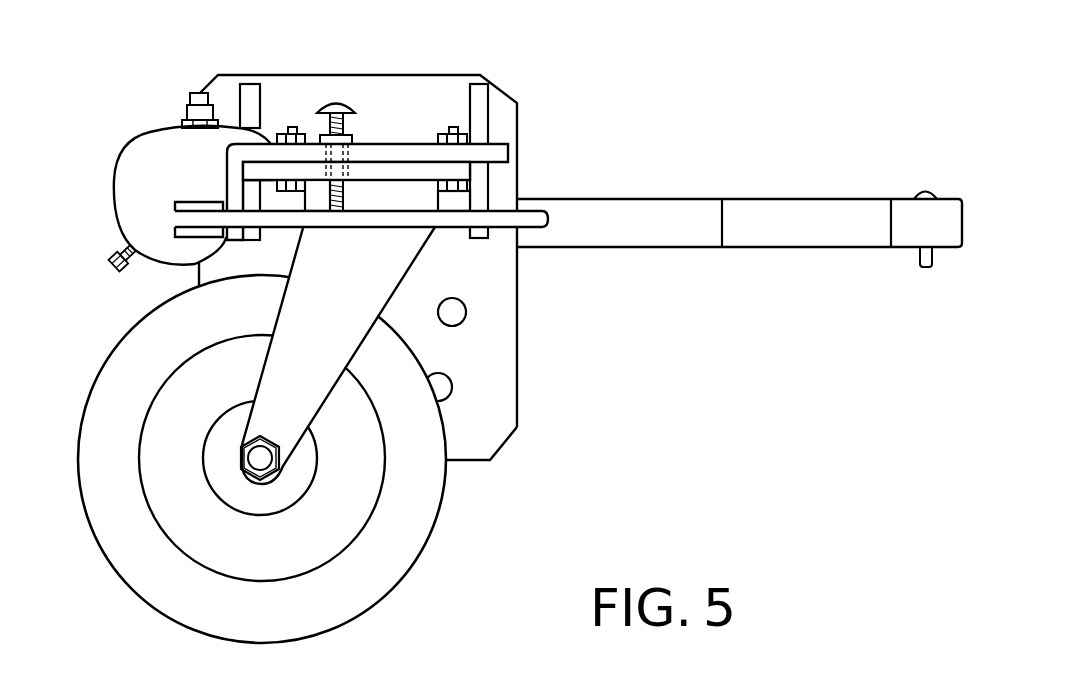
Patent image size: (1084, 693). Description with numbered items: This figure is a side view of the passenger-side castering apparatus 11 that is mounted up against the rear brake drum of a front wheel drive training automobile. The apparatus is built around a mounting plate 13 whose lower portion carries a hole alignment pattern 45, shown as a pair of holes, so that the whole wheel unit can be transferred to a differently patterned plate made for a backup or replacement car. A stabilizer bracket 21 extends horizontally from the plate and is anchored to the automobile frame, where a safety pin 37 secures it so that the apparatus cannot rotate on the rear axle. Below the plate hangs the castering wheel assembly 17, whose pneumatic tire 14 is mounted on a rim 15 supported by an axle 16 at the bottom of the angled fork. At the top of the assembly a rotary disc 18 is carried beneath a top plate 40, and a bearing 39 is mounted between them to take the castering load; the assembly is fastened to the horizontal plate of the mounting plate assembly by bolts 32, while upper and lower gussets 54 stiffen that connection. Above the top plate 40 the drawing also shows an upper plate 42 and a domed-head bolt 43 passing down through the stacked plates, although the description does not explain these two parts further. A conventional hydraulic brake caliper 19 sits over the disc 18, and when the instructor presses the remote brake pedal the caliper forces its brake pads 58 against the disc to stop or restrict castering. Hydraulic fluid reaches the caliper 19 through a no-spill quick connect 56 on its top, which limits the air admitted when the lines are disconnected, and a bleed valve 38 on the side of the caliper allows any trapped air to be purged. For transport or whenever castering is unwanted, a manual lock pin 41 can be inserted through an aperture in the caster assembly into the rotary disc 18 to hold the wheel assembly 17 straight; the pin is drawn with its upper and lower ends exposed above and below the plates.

The castering apparatus 11 is at (514, 110).
The mounting plate 13 is at (519, 284).
The pneumatic tire 14 is at (422, 541).
The rim 15 is at (286, 578).
The axle 16 is at (273, 442).
The castering wheel assembly 17 is at (315, 287).
The disc 18 is at (548, 218).
The brake caliper 19 is at (157, 131).
The stabilizer bracket 21 is at (796, 243).
The bolts 32 is at (293, 130).
The safety pin 37 is at (925, 191).
The bleed valve 38 is at (122, 248).
The bearing 39 is at (393, 213).
The top plate 40 is at (489, 163).
The manual lock pin 41 is at (343, 121).
The upper plate 42 is at (353, 143).
The adjusting bolt 43 is at (346, 104).
The hole alignment pattern 45 is at (466, 315).
The gussets 54 is at (252, 82).
The quick connect 56 is at (203, 93).
The brake pads 58 is at (212, 203).